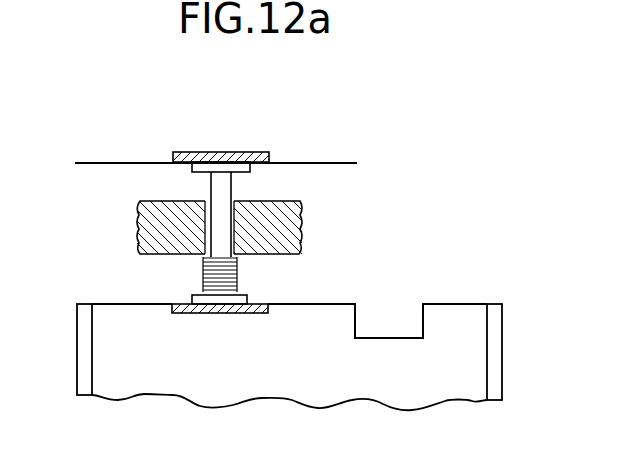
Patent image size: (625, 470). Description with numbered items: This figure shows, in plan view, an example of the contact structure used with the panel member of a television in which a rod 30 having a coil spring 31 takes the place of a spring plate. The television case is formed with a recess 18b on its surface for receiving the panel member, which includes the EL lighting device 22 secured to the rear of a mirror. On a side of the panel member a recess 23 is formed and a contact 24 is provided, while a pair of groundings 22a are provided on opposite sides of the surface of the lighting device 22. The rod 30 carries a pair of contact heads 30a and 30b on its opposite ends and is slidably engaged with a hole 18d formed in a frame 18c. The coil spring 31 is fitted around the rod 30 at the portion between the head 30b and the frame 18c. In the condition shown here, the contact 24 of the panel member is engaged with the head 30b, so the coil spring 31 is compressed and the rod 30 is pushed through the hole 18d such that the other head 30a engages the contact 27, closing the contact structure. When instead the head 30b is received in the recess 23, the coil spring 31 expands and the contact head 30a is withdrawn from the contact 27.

The recess 18b is at (90, 165).
The frame 18c is at (290, 222).
The hole 18d is at (238, 203).
The EL lighting device 22 is at (137, 393).
The groundings 22a is at (83, 328).
The recess 23 is at (423, 321).
The contact 24 is at (177, 303).
The contact 27 is at (193, 153).
The rod 30 is at (222, 233).
The contact head 30a is at (194, 169).
The contact head 30b is at (240, 300).
The coil spring 31 is at (203, 278).